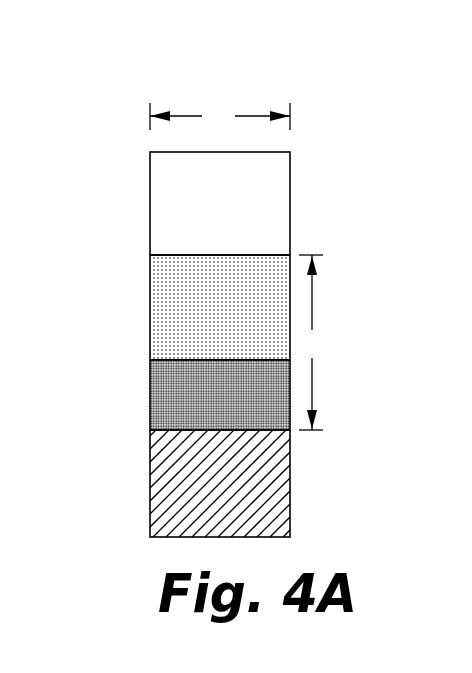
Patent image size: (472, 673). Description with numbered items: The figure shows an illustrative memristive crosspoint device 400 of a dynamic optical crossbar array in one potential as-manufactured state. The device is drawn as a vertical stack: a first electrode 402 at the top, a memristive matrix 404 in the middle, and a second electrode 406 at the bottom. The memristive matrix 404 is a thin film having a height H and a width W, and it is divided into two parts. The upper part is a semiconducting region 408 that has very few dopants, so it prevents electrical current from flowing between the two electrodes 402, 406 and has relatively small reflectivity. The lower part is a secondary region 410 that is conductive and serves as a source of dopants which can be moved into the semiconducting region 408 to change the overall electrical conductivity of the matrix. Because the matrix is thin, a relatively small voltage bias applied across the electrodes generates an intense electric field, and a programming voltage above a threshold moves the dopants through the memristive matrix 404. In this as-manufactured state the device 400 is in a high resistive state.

The memristive crosspoint device 400 is at (80, 108).
The first electrode 402 is at (135, 153).
The memristive matrix 404 is at (238, 342).
The second electrode 406 is at (135, 435).
The semiconducting region 408 is at (273, 288).
The secondary region 410 is at (275, 382).